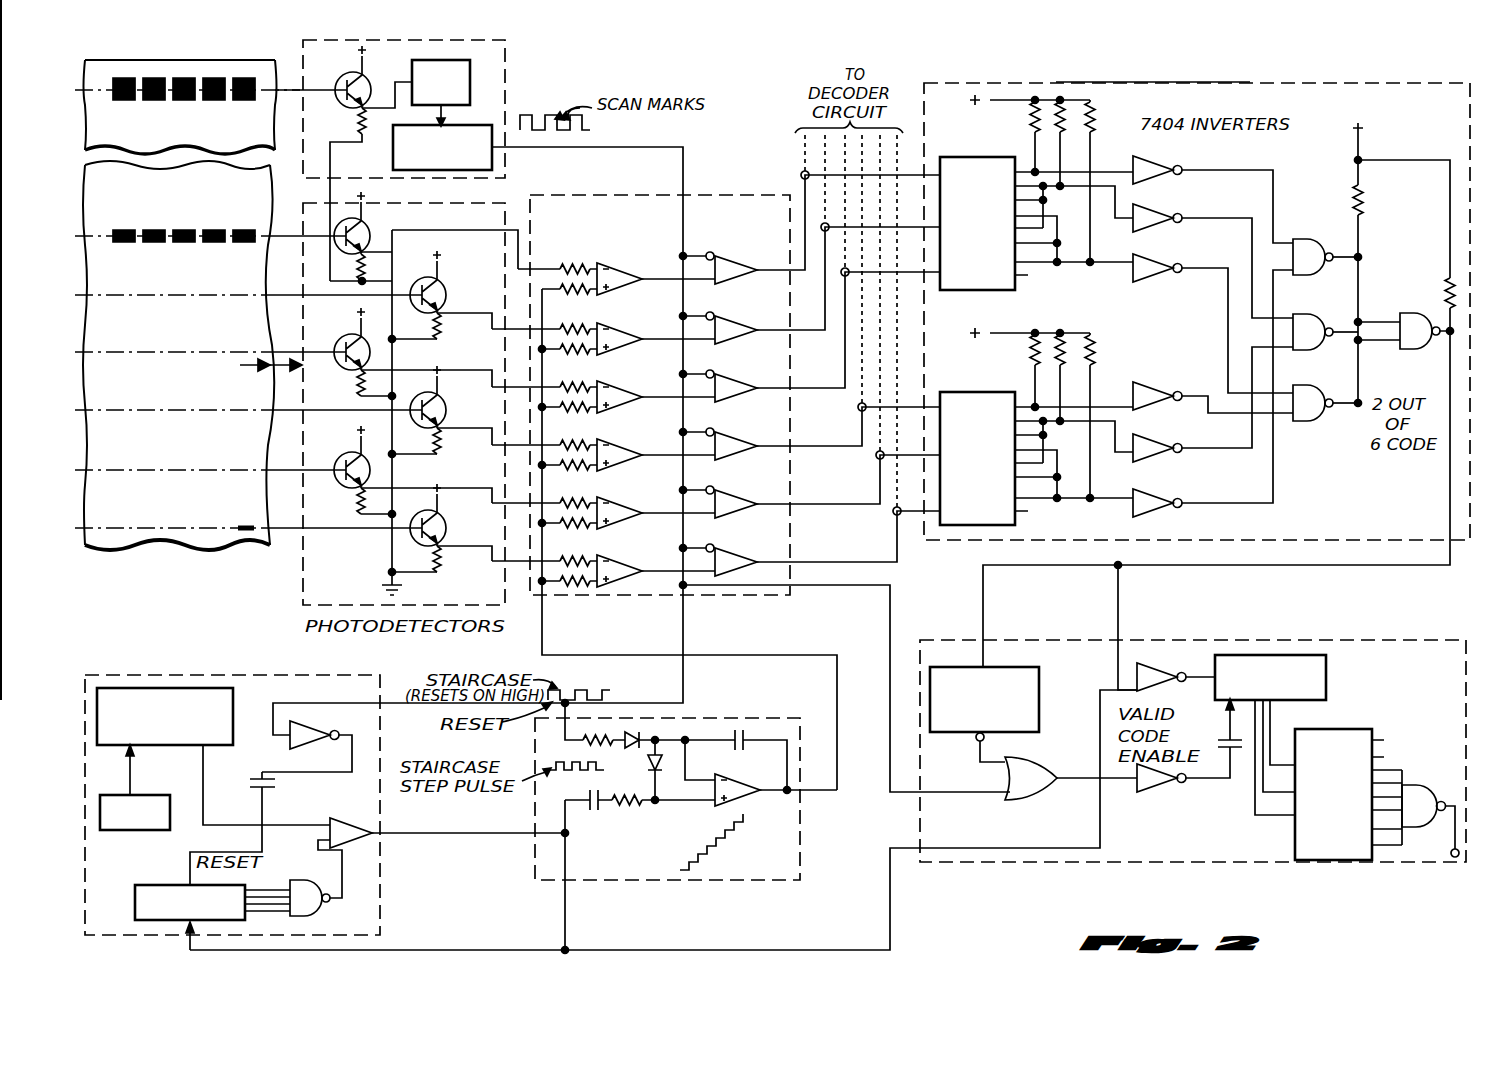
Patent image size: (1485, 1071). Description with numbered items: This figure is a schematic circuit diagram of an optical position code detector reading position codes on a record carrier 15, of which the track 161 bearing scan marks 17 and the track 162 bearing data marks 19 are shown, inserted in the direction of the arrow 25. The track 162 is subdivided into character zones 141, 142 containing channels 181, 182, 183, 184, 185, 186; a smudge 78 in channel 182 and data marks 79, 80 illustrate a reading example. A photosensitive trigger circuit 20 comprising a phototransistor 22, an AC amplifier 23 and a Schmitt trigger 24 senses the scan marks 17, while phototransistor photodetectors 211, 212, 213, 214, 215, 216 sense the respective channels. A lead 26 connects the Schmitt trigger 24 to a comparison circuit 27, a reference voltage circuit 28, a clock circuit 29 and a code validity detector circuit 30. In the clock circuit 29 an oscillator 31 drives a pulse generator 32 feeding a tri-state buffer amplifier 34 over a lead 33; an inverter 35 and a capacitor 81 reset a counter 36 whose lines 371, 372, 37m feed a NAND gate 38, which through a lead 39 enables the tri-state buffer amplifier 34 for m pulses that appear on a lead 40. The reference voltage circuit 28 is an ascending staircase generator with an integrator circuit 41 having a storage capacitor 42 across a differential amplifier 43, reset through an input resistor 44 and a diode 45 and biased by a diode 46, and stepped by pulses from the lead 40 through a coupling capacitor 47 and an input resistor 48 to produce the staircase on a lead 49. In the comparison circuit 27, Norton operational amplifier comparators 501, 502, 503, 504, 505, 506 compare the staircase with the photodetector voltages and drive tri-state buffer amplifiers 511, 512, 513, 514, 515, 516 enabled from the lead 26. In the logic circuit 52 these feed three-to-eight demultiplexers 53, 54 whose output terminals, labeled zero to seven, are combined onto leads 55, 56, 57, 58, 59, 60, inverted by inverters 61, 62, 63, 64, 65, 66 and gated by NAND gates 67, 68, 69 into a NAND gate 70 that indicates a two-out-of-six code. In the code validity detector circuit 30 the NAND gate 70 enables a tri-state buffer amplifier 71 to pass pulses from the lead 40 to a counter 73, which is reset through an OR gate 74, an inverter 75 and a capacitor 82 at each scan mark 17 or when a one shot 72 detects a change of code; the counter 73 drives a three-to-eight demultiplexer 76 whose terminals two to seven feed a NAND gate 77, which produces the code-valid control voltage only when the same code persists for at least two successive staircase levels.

The character zone 141 is at (248, 76).
The character zone 142 is at (210, 76).
The record carrier 15 is at (181, 560).
The track 161 is at (180, 107).
The track 162 is at (178, 353).
The scan marks 17 is at (223, 100).
The channel 181 is at (92, 236).
The channel 182 is at (96, 295).
The channel 183 is at (98, 354).
The channel 184 is at (106, 410).
The channel 185 is at (111, 470).
The channel 186 is at (105, 546).
The data marks 19 is at (212, 242).
The photosensitive trigger circuit 20 is at (528, 89).
The photodetector 211 is at (376, 230).
The photodetector 212 is at (440, 289).
The photodetector 213 is at (335, 340).
The photodetector 214 is at (440, 407).
The photodetector 215 is at (334, 492).
The photodetector 216 is at (440, 525).
The phototransistor 22 is at (340, 84).
The AC amplifier 23 is at (449, 60).
The Schmitt trigger 24 is at (470, 125).
The arrow 25 is at (265, 370).
The lead 26 is at (666, 147).
The comparison circuit 27 is at (665, 603).
The reference voltage circuit 28 is at (805, 870).
The clock circuit 29 is at (303, 682).
The code validity detector circuit 30 is at (1430, 874).
The oscillator 31 is at (135, 831).
The pulse generator 32 is at (161, 752).
The lead 33 is at (204, 810).
The tri-state buffer amplifier 34 is at (353, 822).
The inverter 35 is at (300, 746).
The counter 36 is at (135, 896).
The line 371 is at (270, 888).
The line 372 is at (268, 888).
The line 37m is at (253, 914).
The NAND gate 38 is at (318, 910).
The lead 39 is at (337, 882).
The lead 40 is at (520, 838).
The integrator circuit 41 is at (739, 758).
The storage capacitor 42 is at (744, 741).
The differential amplifier 43 is at (745, 797).
The input resistor 44 is at (613, 746).
The diode 45 is at (644, 740).
The diode 46 is at (660, 777).
The coupling capacitor 47 is at (593, 812).
The input resistor 48 is at (629, 810).
The lead 49 is at (796, 657).
The Norton operational amplifier comparator 501 is at (615, 284).
The Norton operational amplifier comparator 502 is at (615, 344).
The Norton operational amplifier comparator 503 is at (615, 402).
The Norton operational amplifier comparator 504 is at (615, 460).
The Norton operational amplifier comparator 505 is at (615, 518).
The Norton operational amplifier comparator 506 is at (608, 578).
The tri-state buffer amplifier 511 is at (727, 278).
The tri-state buffer amplifier 512 is at (727, 338).
The tri-state buffer amplifier 513 is at (727, 396).
The tri-state buffer amplifier 514 is at (736, 443).
The tri-state buffer amplifier 515 is at (727, 506).
The tri-state buffer amplifier 516 is at (727, 564).
The logic circuit 52 is at (1278, 82).
The 3/8 demultiplexer 53 is at (978, 155).
The 3/8 demultiplexer 54 is at (984, 391).
The lead 55 is at (1087, 170).
The lead 56 is at (1075, 188).
The lead 57 is at (1065, 264).
The lead 58 is at (1087, 406).
The lead 59 is at (1075, 422).
The lead 60 is at (1065, 500).
The inverter 61 is at (1160, 176).
The inverter 62 is at (1160, 226).
The inverter 63 is at (1160, 282).
The inverter 64 is at (1148, 398).
The inverter 65 is at (1148, 445).
The inverter 66 is at (1156, 502).
The NAND gate 67 is at (1312, 242).
The NAND gate 68 is at (1314, 314).
The NAND gate 69 is at (1314, 388).
The NAND gate 70 is at (1404, 348).
The tri-state buffer amplifier 71 is at (1156, 672).
The one shot 72 is at (1040, 674).
The counter 73 is at (1326, 666).
The OR gate 74 is at (1025, 795).
The inverter 75 is at (1140, 788).
The 3/8 demultiplexer 76 is at (1330, 730).
The NAND gate 77 is at (1418, 794).
The smudge 78 is at (250, 283).
The data mark 79 is at (252, 230).
The data mark 80 is at (240, 542).
The capacitor 81 is at (260, 776).
The capacitor 82 is at (1225, 740).